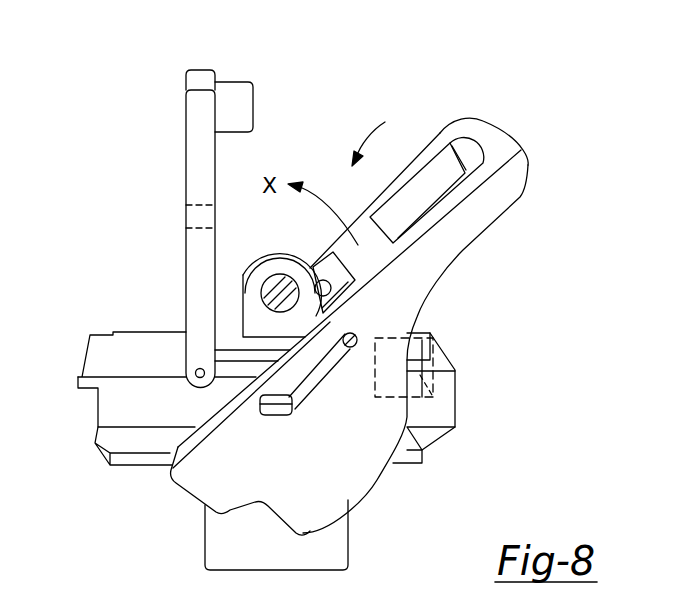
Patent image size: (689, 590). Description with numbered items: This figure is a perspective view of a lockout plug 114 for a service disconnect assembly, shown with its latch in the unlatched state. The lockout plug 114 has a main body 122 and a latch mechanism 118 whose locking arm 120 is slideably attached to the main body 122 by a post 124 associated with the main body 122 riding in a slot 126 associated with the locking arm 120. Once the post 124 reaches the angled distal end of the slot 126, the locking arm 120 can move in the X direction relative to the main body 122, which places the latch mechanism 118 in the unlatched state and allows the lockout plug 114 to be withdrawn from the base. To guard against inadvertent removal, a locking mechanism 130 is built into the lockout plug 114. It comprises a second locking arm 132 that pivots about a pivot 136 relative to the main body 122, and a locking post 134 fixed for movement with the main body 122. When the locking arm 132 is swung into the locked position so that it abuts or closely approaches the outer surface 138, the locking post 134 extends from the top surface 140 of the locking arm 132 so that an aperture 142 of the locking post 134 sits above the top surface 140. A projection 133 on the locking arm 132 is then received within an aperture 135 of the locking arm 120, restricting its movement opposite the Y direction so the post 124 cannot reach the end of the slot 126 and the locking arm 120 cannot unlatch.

The lockout plug 114 is at (540, 156).
The latch mechanism 118 is at (382, 133).
The locking arm 120 is at (490, 193).
The main body 122 is at (113, 412).
The post 124 is at (285, 408).
The slot 126 is at (378, 346).
The locking mechanism 130 is at (198, 205).
The locking arm 132 is at (197, 75).
The projection 133 is at (245, 103).
The locking post 134 is at (307, 292).
The aperture 135 is at (447, 166).
The pivot 136 is at (188, 375).
The outer surface 138 is at (466, 138).
The top surface 140 is at (183, 148).
The aperture 142 is at (262, 298).